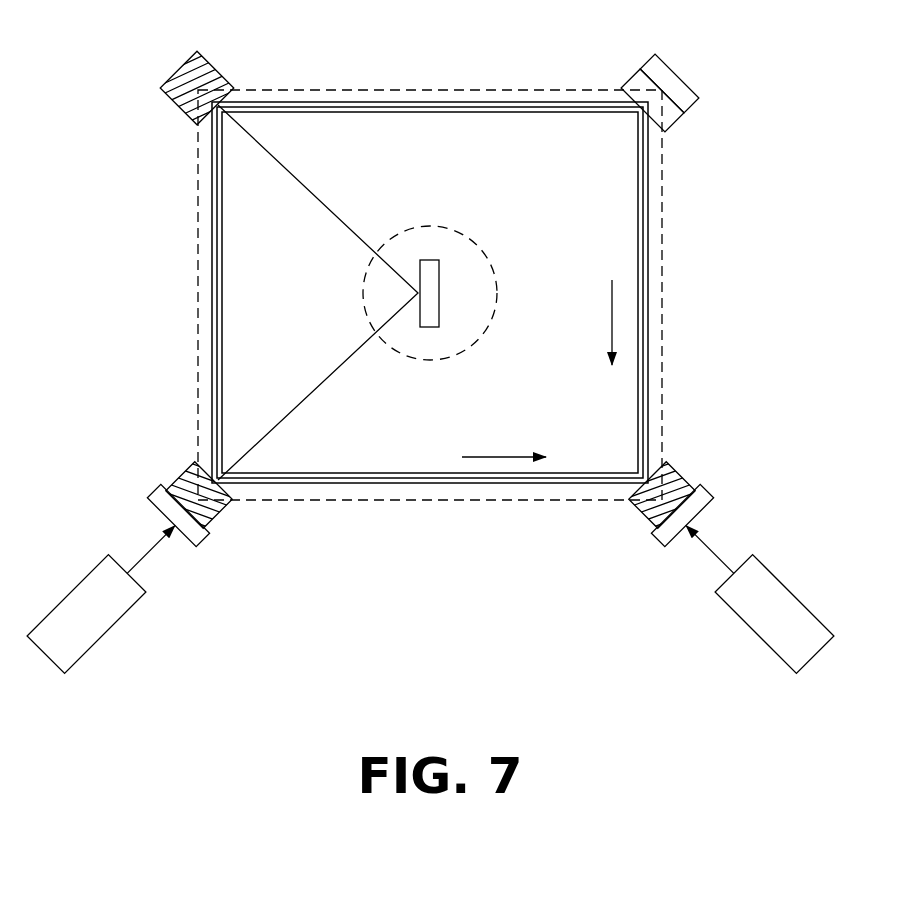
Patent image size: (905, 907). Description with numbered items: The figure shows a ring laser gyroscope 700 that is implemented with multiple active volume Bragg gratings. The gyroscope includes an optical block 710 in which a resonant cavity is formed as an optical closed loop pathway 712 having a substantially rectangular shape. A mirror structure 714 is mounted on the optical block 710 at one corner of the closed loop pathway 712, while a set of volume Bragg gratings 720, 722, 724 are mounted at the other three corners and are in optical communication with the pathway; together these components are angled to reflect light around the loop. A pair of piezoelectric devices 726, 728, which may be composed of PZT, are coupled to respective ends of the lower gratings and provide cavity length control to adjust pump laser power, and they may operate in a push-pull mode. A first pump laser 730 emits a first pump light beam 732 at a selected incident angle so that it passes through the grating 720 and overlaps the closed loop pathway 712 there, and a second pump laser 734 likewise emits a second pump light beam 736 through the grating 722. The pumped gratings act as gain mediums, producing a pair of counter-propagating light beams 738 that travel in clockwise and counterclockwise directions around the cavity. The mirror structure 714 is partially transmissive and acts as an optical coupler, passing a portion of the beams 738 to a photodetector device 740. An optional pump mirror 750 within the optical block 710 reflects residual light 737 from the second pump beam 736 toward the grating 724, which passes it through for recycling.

The ring laser gyroscope 700 is at (782, 220).
The optical block 710 is at (197, 310).
The optical closed loop pathway 712 is at (415, 472).
The mirror structure 714 is at (623, 75).
The volume Bragg grating 720 is at (683, 480).
The volume Bragg grating 722 is at (180, 482).
The volume Bragg grating 724 is at (188, 77).
The piezoelectric device 726 is at (655, 532).
The piezoelectric device 728 is at (207, 541).
The first pump laser 730 is at (743, 619).
The first pump light beam 732 is at (723, 558).
The second pump laser 734 is at (118, 619).
The second pump light beam 736 is at (137, 559).
The residual light 737 is at (315, 195).
The counter-propagating light beams 738 is at (440, 102).
The photodetector device 740 is at (691, 84).
The pump mirror 750 is at (440, 270).